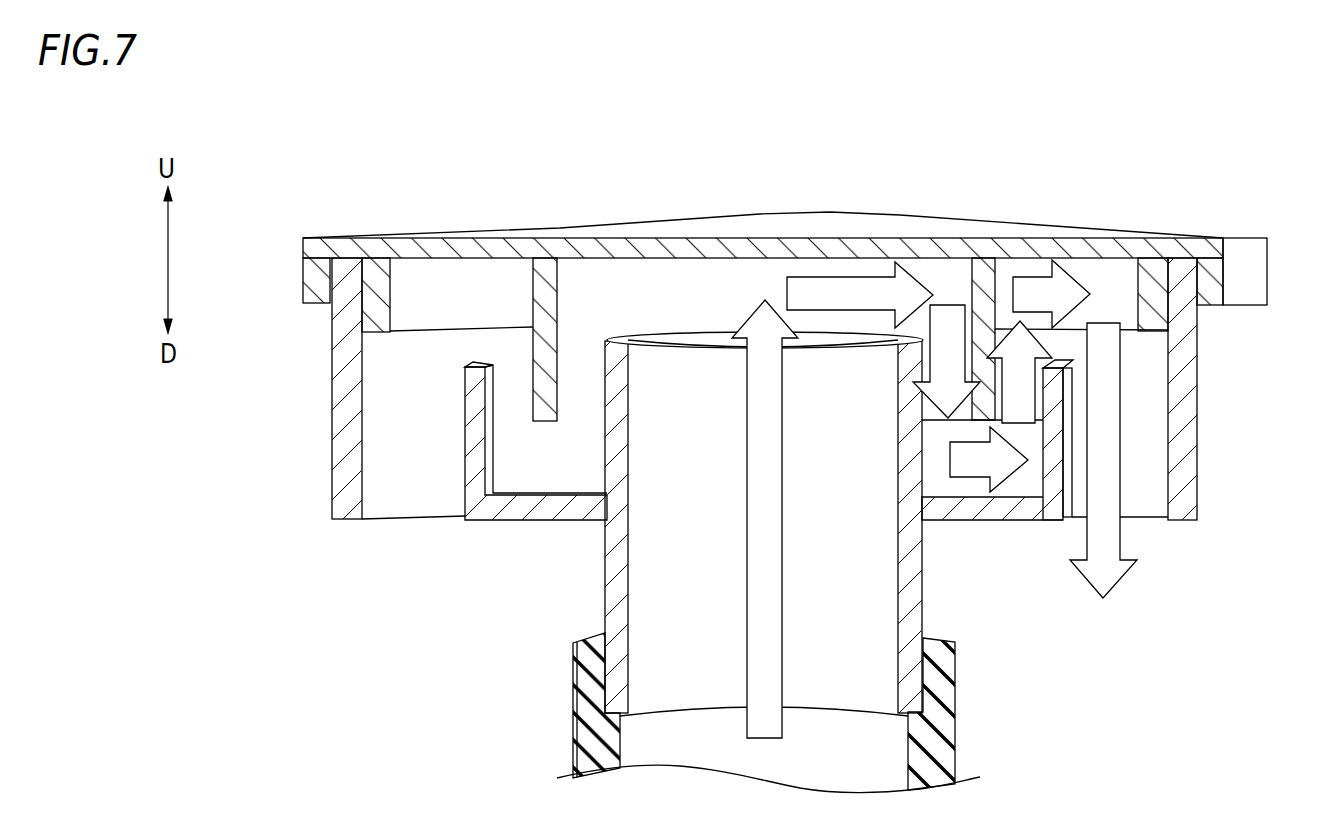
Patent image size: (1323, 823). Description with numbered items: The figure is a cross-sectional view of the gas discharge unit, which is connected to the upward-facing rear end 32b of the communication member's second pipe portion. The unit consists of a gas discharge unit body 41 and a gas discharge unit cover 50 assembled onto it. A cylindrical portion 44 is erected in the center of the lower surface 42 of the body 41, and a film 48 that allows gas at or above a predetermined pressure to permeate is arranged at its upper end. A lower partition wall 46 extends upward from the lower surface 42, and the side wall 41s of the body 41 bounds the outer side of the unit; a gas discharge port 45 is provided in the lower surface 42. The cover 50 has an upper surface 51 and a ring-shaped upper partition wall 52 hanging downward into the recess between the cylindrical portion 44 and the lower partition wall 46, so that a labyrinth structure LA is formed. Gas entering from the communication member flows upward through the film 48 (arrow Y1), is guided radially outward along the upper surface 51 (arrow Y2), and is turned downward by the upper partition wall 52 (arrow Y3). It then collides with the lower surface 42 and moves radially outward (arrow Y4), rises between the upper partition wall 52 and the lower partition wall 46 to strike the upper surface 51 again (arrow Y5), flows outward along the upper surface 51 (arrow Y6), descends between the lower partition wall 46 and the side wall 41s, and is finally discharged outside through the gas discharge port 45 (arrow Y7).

The rear end of the second pipe portion 32b is at (943, 697).
The gas discharge unit body 41 is at (325, 502).
The side wall of the gas discharge unit body 41s is at (1183, 378).
The lower surface 42 is at (988, 505).
The cylindrical portion 44 is at (607, 550).
The gas discharge port 45 is at (1147, 522).
The lower partition wall 46 is at (1057, 445).
The film 48 is at (702, 340).
The gas discharge unit cover 50 is at (785, 269).
The upper surface 51 is at (525, 232).
The upper partition wall 52 is at (553, 300).
The labyrinth structure LA is at (470, 293).
The arrow Y1 is at (760, 648).
The arrow Y2 is at (838, 292).
The arrow Y3 is at (947, 337).
The arrow Y4 is at (972, 463).
The arrow Y5 is at (1020, 383).
The arrow Y6 is at (1043, 297).
The arrow Y7 is at (1108, 572).